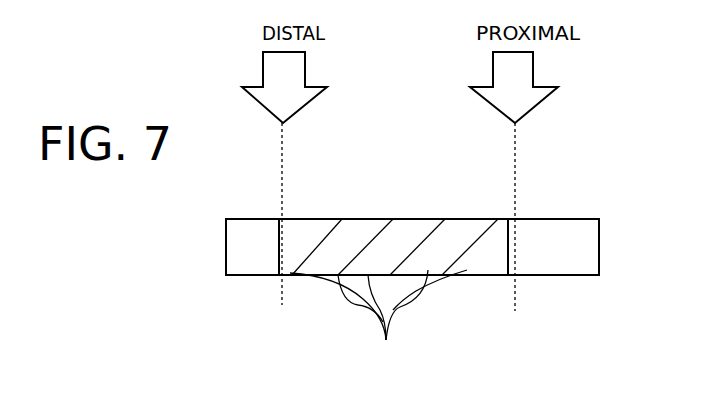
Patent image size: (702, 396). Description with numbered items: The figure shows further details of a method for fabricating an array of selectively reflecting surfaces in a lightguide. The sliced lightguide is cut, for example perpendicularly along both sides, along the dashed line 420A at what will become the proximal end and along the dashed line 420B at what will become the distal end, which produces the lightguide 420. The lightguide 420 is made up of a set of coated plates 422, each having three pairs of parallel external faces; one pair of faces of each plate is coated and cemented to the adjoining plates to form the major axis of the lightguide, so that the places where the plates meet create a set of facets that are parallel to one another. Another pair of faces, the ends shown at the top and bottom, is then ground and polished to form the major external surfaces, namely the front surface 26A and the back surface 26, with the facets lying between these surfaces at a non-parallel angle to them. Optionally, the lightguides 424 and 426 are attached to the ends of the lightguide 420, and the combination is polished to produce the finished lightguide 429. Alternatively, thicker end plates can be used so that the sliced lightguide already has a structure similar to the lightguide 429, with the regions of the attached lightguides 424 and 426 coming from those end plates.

The dashed line 420B is at (284, 87).
The dashed line 420A is at (514, 87).
The back surface 26 is at (475, 275).
The front surface 26A is at (480, 219).
The lightguide 424 is at (252, 247).
The lightguide 426 is at (553, 247).
The lightguide 420 is at (393, 247).
The coated plates 422 is at (378, 320).
The lightguide (LOE) 429 is at (375, 197).